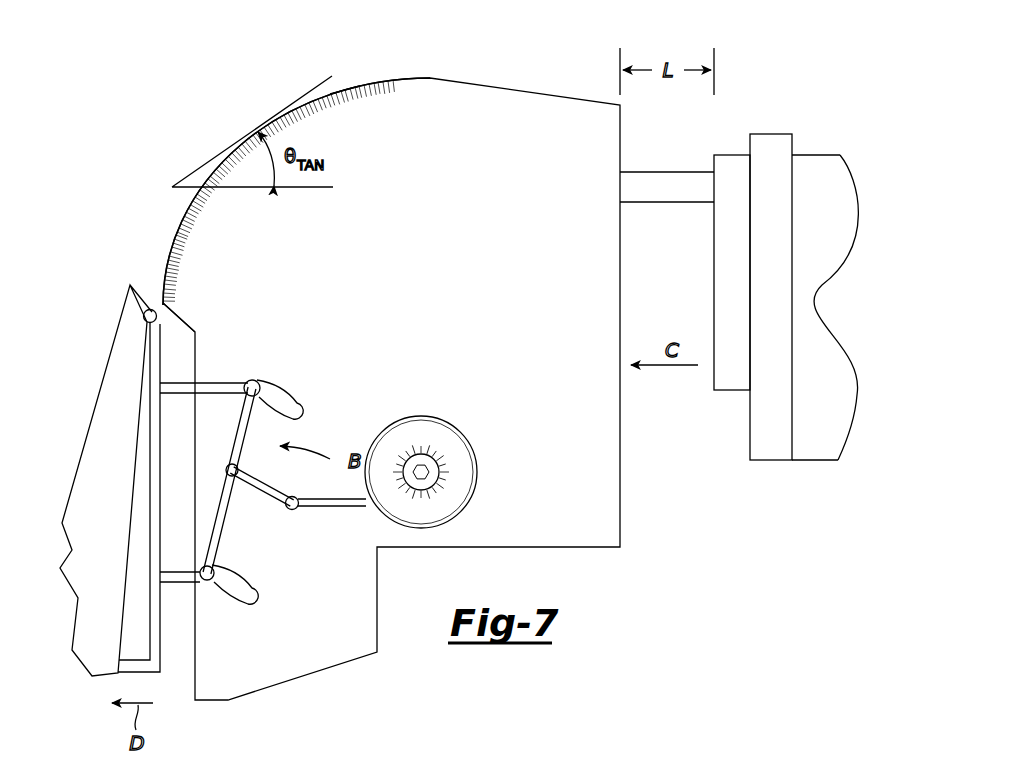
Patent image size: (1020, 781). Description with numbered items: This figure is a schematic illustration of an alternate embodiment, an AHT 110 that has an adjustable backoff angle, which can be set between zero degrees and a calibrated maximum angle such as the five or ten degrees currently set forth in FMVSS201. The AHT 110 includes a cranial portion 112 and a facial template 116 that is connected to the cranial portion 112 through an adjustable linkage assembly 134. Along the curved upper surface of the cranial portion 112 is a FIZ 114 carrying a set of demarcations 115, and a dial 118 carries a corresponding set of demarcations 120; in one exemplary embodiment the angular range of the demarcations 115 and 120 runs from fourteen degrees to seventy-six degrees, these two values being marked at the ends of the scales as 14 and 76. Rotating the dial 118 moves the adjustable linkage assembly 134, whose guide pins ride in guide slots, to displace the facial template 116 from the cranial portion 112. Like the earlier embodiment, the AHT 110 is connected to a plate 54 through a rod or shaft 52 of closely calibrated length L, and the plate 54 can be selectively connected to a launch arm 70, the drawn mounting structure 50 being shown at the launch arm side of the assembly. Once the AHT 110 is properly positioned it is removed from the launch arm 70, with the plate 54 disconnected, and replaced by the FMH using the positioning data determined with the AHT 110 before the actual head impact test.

The AHT 110 is at (156, 99).
The cranial portion 112 is at (507, 108).
The FIZ 114 is at (258, 95).
The demarcations 115 is at (355, 83).
The surface finish 14 is at (392, 92).
The facial template 116 is at (127, 315).
The edge 76 is at (168, 305).
The adjustable linkage assembly 134 is at (243, 528).
The demarcations 120 is at (465, 437).
The dial 118 is at (474, 502).
The handle 50 is at (771, 105).
The shaft 52 is at (661, 204).
The plate 54 is at (731, 375).
The launch arm 70 is at (782, 468).